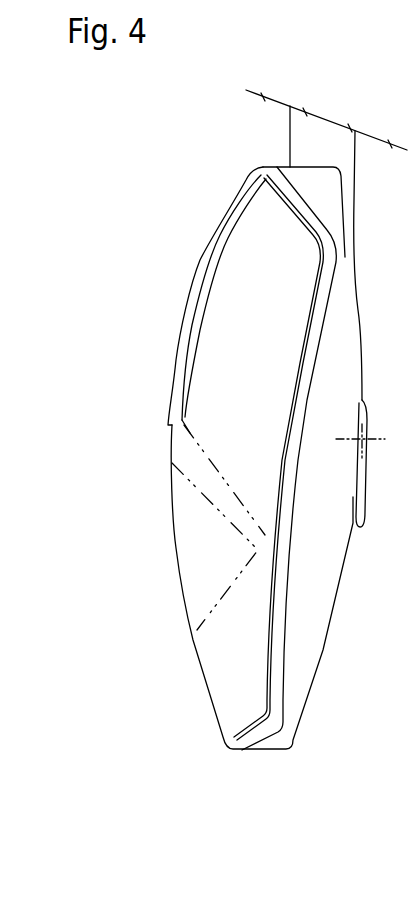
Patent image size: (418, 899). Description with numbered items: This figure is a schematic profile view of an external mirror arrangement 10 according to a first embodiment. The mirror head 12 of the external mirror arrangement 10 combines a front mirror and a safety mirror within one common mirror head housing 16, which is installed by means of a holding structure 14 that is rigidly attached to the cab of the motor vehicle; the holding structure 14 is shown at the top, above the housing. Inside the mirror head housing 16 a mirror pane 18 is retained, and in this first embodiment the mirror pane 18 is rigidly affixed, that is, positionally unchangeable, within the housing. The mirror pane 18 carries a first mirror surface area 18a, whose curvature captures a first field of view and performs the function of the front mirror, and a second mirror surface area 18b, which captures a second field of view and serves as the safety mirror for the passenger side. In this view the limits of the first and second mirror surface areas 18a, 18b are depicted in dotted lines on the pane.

The external mirror arrangement 10 is at (158, 762).
The mirror head 12 is at (222, 222).
The holding structure 14 is at (290, 132).
The mirror head housing 16 is at (278, 749).
The mirror pane 18 is at (187, 607).
The first mirror surface area 18a is at (183, 538).
The second mirror surface area 18b is at (205, 357).